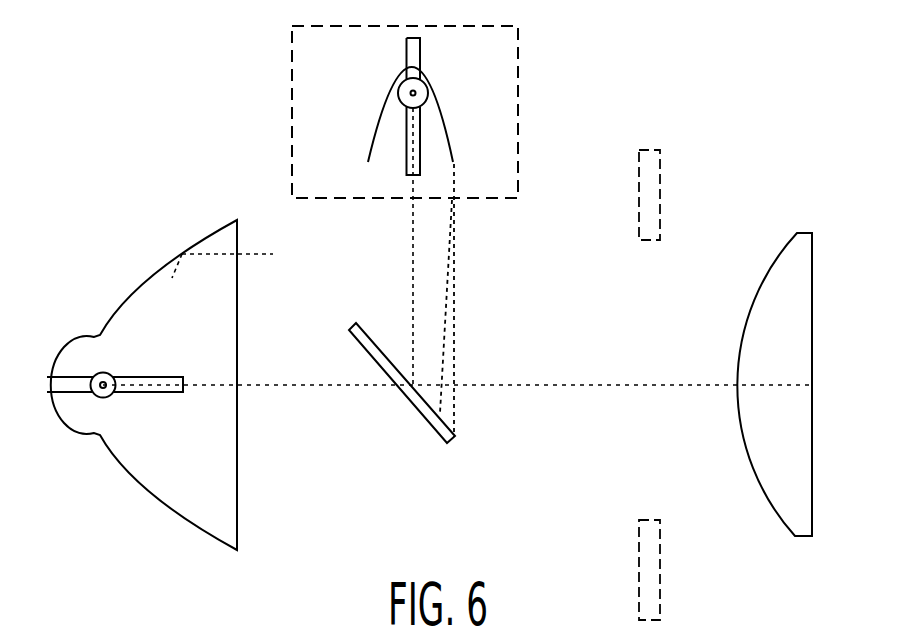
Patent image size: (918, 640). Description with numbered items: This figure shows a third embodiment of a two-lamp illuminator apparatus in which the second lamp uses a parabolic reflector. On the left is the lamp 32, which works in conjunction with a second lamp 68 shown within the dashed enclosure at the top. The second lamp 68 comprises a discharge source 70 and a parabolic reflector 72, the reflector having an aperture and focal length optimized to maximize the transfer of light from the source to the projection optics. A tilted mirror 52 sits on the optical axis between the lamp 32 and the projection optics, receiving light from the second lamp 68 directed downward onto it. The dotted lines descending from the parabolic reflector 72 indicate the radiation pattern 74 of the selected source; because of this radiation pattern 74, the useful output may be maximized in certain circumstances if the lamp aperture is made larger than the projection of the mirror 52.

The lamp 32 is at (182, 252).
The mirror 52 is at (427, 418).
The second lamp 68 is at (489, 76).
The discharge source 70 is at (408, 92).
The parabolic reflector 72 is at (372, 143).
The radiation pattern 74 is at (456, 298).